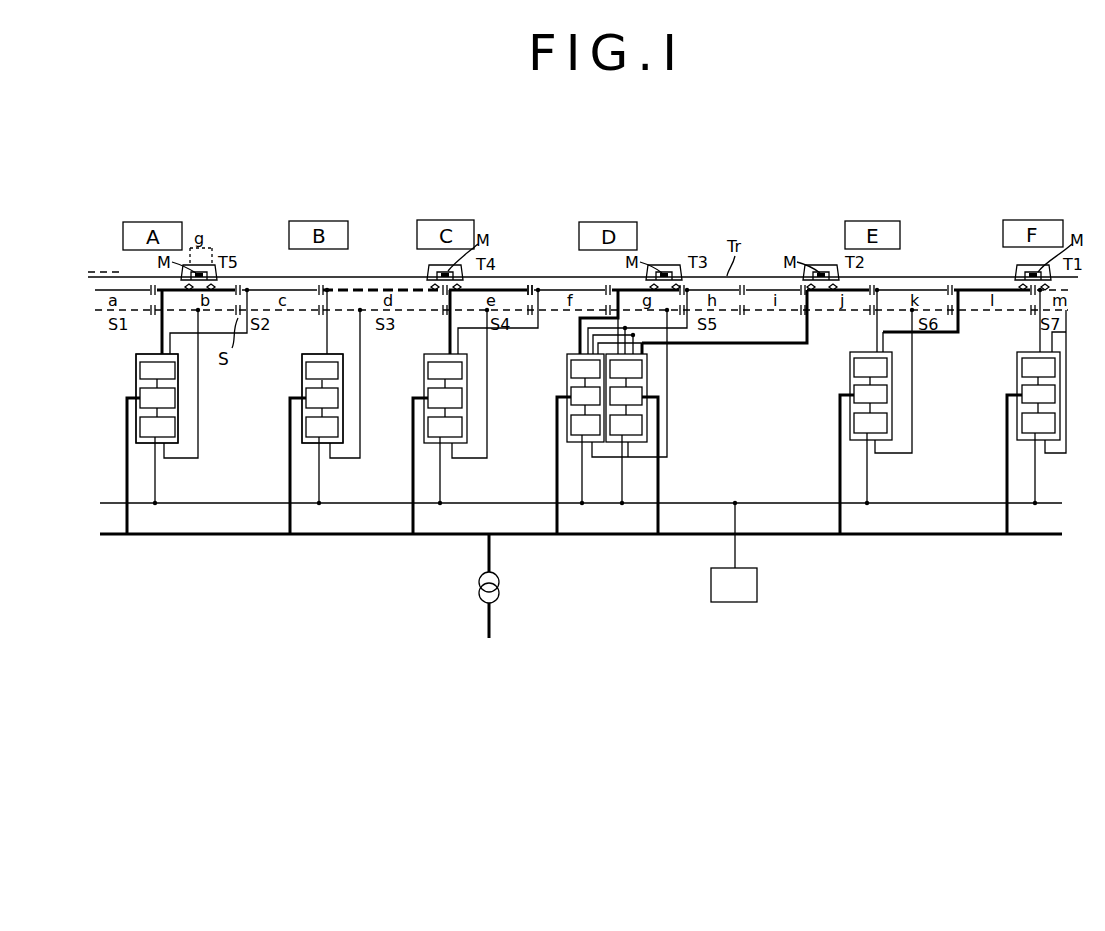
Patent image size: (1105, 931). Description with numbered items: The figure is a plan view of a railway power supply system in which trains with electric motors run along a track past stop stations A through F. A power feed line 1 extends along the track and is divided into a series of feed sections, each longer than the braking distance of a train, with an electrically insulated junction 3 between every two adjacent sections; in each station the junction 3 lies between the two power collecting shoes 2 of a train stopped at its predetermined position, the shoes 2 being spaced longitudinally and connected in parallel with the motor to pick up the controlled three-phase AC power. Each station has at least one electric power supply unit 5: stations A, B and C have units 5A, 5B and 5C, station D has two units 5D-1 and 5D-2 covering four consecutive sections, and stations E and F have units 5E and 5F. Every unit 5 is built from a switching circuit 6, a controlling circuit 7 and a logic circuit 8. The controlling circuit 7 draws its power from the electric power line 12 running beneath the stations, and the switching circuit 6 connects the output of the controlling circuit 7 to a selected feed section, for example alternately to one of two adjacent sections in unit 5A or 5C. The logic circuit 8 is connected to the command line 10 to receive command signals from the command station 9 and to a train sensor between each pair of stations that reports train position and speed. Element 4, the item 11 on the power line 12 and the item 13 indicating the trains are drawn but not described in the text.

The power feed line 1 is at (258, 289).
The power collecting shoes 2 is at (240, 284).
The electrically insulated junction 3 is at (322, 287).
The section insulator 4 is at (533, 284).
The electric power supply unit 5 is at (185, 442).
The electric power supply unit of station A 5A is at (178, 403).
The electric power supply unit of station B 5B is at (303, 443).
The electric power supply unit of station C 5C is at (424, 443).
The first electric power supply unit of station D 5D-1 is at (567, 442).
The second electric power supply unit of station D 5D-2 is at (647, 442).
The electric power supply unit of station E 5E is at (850, 440).
The electric power supply unit of station F 5F is at (1017, 440).
The switching circuit 6 is at (140, 370).
The controlling circuit 7 is at (140, 398).
The logic circuit 8 is at (140, 425).
The command station 9 is at (757, 586).
The command line 10 is at (100, 503).
The power transformer 11 is at (500, 590).
The electric power line 12 is at (100, 534).
The carriage 13 is at (438, 272).